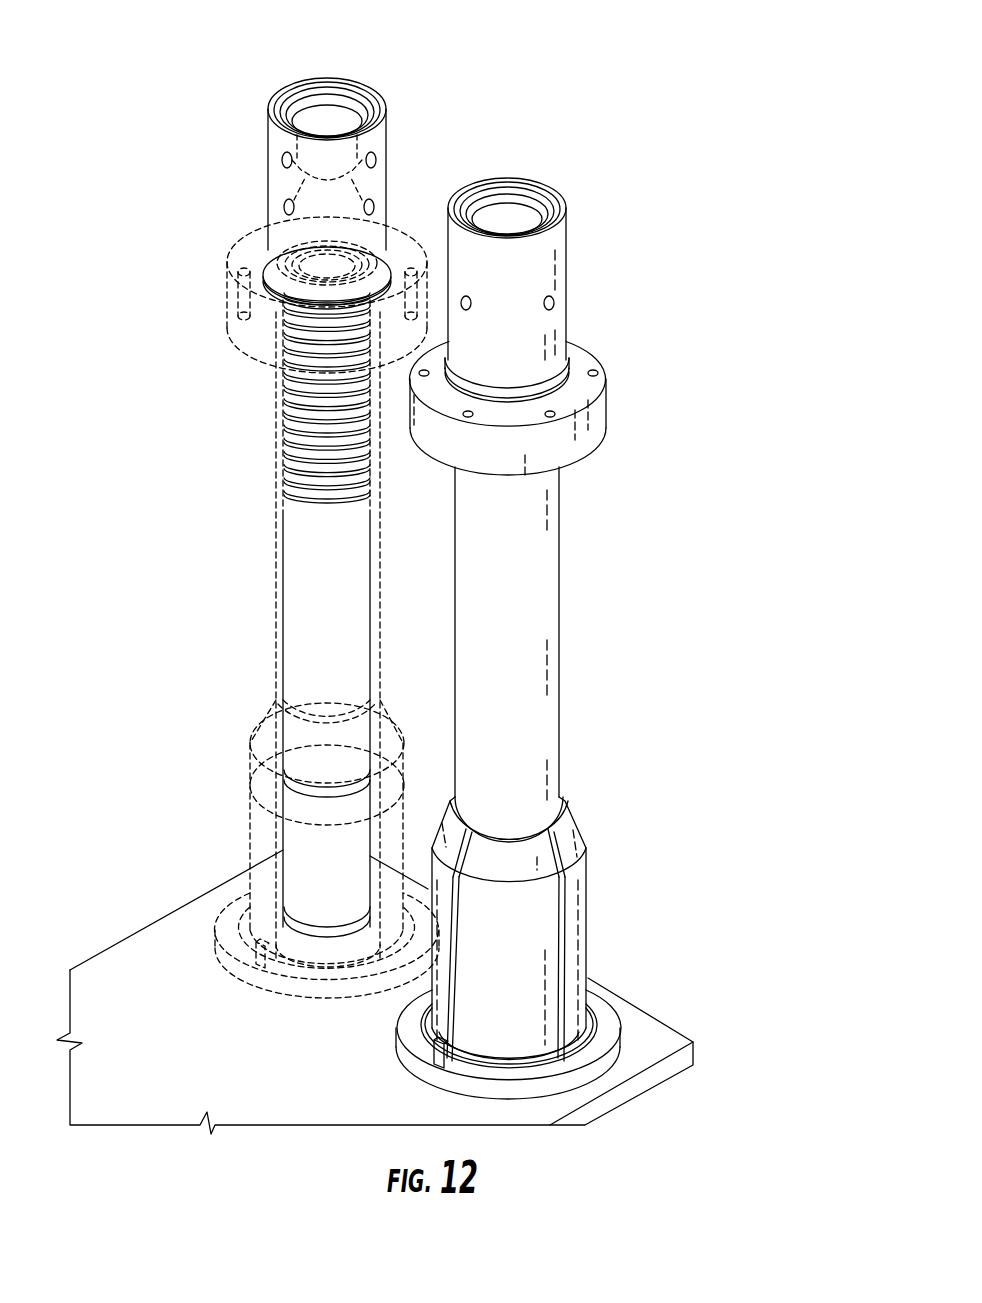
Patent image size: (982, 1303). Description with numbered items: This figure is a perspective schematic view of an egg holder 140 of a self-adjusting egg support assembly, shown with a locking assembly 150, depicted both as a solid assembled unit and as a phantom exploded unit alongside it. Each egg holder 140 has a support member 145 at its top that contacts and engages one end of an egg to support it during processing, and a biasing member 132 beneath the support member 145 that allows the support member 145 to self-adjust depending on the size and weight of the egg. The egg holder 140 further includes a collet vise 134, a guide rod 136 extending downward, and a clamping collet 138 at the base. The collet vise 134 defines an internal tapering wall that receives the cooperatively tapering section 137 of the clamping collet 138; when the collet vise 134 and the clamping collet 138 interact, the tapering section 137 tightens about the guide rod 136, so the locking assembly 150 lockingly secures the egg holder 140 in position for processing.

The biasing member 132 is at (284, 440).
The collet vise 134 is at (580, 445).
The guide rod 136 is at (312, 578).
The tapering section 137 is at (566, 838).
The clamping collet 138 is at (520, 987).
The egg holder 140 is at (395, 484).
The support member 145 is at (372, 93).
The locking assembly 150 is at (391, 899).